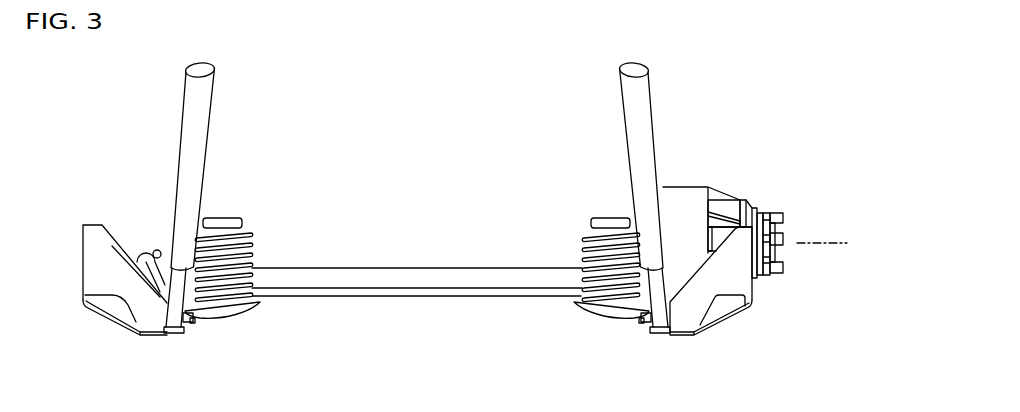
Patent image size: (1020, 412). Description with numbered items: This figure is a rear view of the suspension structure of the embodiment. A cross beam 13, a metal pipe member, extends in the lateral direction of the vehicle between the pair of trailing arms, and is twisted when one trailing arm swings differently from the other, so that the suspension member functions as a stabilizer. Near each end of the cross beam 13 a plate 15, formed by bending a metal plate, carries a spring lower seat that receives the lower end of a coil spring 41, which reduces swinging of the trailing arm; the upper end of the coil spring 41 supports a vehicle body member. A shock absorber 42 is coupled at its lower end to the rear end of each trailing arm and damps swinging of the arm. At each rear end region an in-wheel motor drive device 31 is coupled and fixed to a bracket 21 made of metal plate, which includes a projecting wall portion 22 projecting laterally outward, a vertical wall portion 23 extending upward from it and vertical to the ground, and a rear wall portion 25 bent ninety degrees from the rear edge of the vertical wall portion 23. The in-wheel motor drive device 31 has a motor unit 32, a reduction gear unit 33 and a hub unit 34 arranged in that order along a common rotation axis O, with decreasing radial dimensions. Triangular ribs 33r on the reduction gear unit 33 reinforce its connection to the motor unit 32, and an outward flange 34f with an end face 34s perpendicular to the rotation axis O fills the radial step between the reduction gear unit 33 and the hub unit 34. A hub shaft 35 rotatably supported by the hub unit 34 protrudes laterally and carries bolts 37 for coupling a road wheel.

The cross beam 13 is at (410, 273).
The plate 15 is at (255, 308).
The bracket 21 is at (434, 295).
The projecting wall portion 22 is at (118, 324).
The vertical wall portion 23 is at (82, 253).
The rear wall portion 25 is at (102, 297).
The in-wheel motor drive device 31 is at (746, 199).
The motor unit 32 is at (672, 185).
The reduction gear unit 33 is at (731, 207).
The triangular ribs 33r is at (722, 205).
The hub unit 34 is at (754, 213).
The outward flange 34f is at (744, 200).
The end face 34s is at (749, 201).
The hub shaft 35 is at (783, 250).
The bolts 37 is at (784, 218).
The coil spring 41 is at (252, 243).
The shock absorber 42 is at (193, 130).
The rotation axis O is at (828, 244).